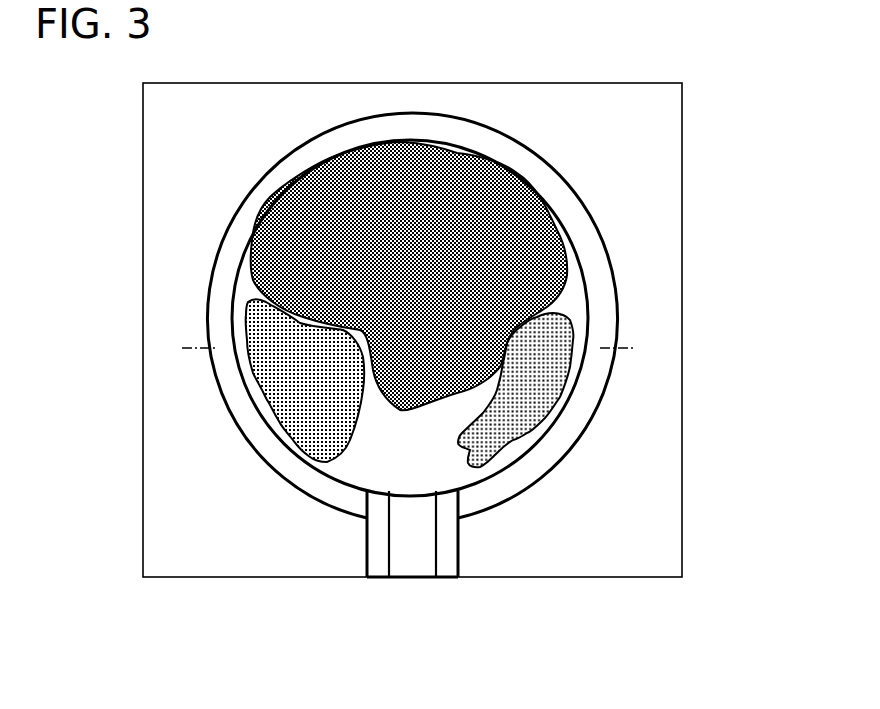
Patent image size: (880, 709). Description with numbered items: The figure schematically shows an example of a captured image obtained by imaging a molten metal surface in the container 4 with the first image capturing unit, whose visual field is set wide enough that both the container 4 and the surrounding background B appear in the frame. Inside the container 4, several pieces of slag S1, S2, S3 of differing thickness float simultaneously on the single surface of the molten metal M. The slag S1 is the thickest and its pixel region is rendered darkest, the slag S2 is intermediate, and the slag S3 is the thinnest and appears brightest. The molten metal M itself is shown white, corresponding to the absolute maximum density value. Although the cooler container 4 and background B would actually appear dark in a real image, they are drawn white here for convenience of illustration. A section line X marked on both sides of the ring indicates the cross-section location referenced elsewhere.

The background B is at (635, 168).
The container 4 is at (595, 311).
The molten metal M is at (395, 440).
The slag S1 is at (397, 168).
The slag S2 is at (288, 390).
The slag S3 is at (500, 434).
The section line X- X is at (182, 329).